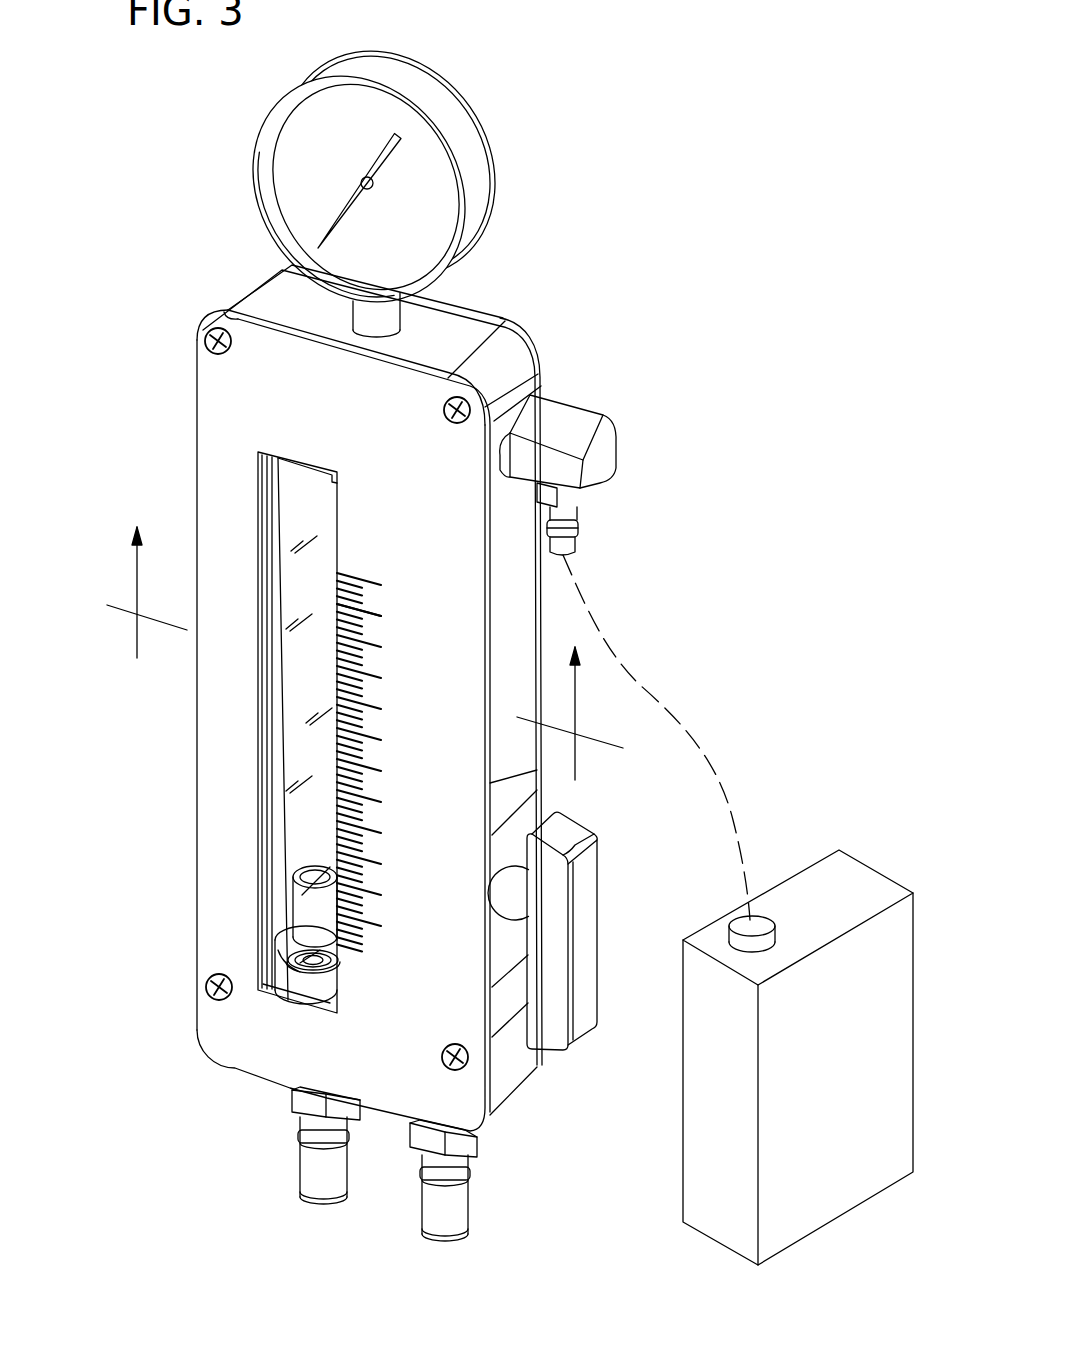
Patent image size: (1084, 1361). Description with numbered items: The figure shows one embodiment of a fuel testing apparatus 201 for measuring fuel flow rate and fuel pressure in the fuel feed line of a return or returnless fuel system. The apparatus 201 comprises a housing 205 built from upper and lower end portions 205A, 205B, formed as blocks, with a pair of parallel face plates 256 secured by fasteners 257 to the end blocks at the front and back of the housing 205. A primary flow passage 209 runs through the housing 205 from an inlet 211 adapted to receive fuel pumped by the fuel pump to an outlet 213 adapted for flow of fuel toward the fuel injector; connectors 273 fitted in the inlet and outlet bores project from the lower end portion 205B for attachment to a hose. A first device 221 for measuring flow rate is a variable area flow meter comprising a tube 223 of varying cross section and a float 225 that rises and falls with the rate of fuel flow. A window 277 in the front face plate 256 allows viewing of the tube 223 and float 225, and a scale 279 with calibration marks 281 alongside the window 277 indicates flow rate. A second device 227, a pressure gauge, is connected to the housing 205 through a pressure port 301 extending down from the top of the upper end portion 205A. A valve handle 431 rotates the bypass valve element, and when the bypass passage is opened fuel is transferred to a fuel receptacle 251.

The fuel testing apparatus 201 is at (628, 275).
The housing 205 is at (234, 420).
The upper end portion 205A is at (460, 347).
The lower end portion 205B is at (498, 1110).
The primary flow passage 209 is at (316, 736).
The inlet 211 is at (318, 1203).
The outlet 213 is at (447, 1240).
The first device 221 is at (262, 922).
The tube 223 is at (281, 848).
The float 225 is at (302, 907).
The second device 227 is at (247, 185).
The fuel receptacle 251 is at (833, 887).
The face plates 256 is at (217, 677).
The fasteners 257 is at (205, 335).
The connectors 273 is at (325, 1165).
The window 277 is at (293, 523).
The scale 279 is at (377, 563).
The calibration marks 281 is at (380, 610).
The pressure port 301 is at (380, 322).
The valve handle 431 is at (585, 895).